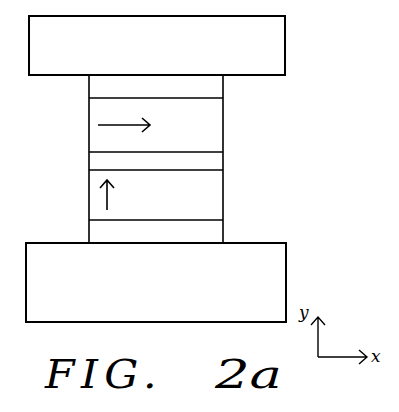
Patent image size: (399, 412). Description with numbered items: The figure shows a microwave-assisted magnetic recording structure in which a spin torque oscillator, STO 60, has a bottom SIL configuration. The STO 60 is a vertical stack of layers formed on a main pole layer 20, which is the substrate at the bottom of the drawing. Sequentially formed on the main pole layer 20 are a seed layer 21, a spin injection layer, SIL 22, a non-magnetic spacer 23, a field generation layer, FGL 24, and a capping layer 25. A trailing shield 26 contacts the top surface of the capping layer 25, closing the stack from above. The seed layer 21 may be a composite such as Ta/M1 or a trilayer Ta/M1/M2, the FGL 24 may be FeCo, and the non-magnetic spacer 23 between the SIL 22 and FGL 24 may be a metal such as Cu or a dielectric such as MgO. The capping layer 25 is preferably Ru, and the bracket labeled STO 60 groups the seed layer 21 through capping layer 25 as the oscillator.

The main pole layer 20 is at (272, 281).
The seed layer 21 is at (208, 229).
The SIL 22 is at (208, 197).
The non-magnetic spacer 23 is at (208, 162).
The FGL 24 is at (208, 128).
The capping layer 25 is at (208, 88).
The trailing shield 26 is at (272, 43).
The STO 60 is at (78, 75).